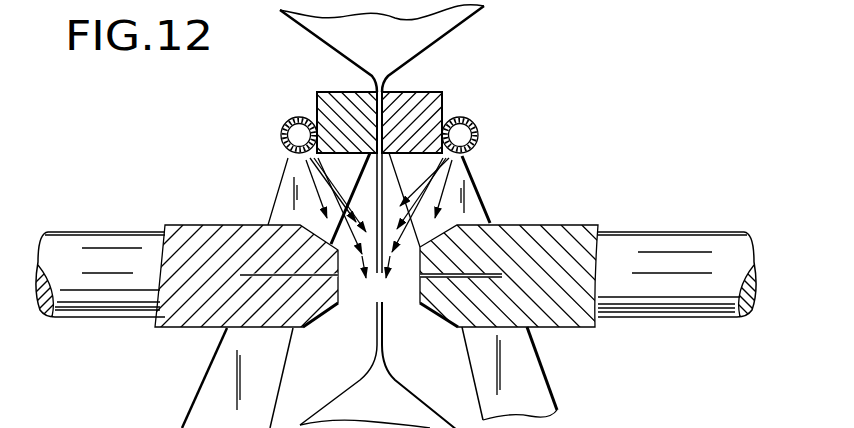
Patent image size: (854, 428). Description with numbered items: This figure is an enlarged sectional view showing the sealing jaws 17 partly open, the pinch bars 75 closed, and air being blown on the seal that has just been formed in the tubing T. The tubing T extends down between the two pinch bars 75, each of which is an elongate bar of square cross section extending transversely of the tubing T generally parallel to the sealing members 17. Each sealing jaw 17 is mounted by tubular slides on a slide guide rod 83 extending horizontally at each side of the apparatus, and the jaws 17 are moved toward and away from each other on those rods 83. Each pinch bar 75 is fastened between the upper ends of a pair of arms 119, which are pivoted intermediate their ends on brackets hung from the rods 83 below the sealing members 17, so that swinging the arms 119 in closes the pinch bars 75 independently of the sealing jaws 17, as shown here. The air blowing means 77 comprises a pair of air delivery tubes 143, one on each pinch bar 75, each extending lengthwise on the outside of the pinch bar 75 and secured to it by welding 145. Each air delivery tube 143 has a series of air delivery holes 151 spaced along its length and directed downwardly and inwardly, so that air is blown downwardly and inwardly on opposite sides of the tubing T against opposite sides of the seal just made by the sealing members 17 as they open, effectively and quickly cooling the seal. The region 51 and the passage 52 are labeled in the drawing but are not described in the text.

The tubing T is at (447, 30).
The pinch bar 75 is at (343, 93).
The slot passage 51 is at (373, 285).
The welding 145 is at (300, 115).
The air delivery tube 143 is at (281, 138).
The air blowing means 77 is at (280, 121).
The air delivery holes 151 is at (296, 164).
The sealing jaw 17 is at (183, 223).
The slide guide rod 83 is at (288, 280).
The arm 119 is at (227, 365).
The outlet passage 52 is at (383, 336).